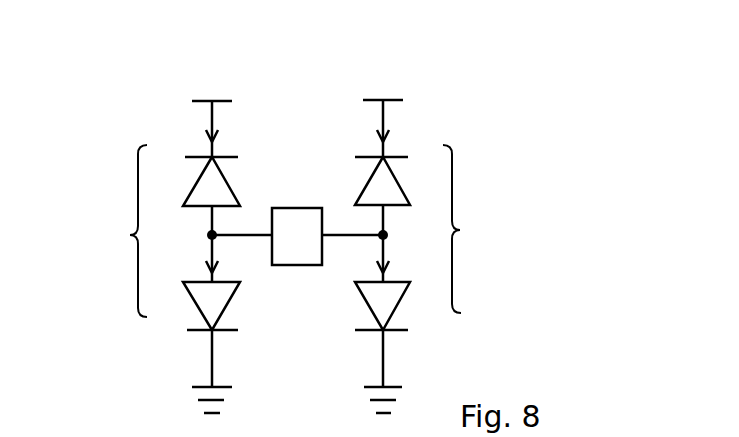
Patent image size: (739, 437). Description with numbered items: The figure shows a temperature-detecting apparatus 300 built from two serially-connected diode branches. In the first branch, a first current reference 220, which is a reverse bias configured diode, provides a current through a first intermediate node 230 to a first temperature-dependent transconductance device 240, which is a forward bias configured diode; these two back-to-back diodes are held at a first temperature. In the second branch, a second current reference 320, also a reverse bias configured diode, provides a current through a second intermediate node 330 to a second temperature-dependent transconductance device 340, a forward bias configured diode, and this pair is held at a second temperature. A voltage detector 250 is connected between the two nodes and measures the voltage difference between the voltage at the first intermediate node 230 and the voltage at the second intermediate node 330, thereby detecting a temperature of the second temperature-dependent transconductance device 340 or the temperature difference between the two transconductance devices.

The first current reference 220 is at (237, 173).
The first intermediate node 230 is at (215, 233).
The first temperature-dependent transconductance device 240 is at (242, 308).
The voltage detector 250 is at (298, 265).
The temperature-detecting apparatus 300 is at (520, 113).
The second current reference 320 is at (402, 172).
The second intermediate node 330 is at (388, 232).
The second temperature-dependent transconductance device 340 is at (453, 315).